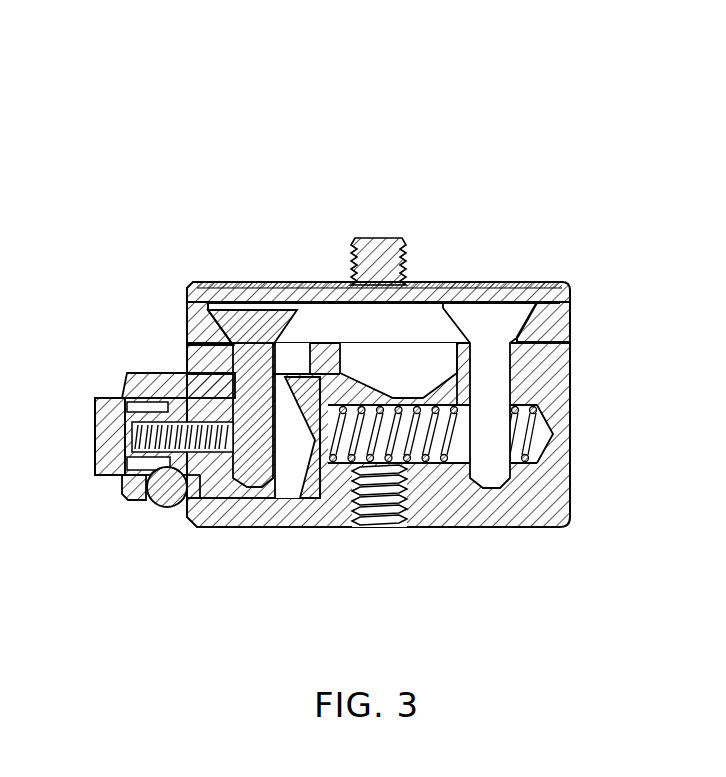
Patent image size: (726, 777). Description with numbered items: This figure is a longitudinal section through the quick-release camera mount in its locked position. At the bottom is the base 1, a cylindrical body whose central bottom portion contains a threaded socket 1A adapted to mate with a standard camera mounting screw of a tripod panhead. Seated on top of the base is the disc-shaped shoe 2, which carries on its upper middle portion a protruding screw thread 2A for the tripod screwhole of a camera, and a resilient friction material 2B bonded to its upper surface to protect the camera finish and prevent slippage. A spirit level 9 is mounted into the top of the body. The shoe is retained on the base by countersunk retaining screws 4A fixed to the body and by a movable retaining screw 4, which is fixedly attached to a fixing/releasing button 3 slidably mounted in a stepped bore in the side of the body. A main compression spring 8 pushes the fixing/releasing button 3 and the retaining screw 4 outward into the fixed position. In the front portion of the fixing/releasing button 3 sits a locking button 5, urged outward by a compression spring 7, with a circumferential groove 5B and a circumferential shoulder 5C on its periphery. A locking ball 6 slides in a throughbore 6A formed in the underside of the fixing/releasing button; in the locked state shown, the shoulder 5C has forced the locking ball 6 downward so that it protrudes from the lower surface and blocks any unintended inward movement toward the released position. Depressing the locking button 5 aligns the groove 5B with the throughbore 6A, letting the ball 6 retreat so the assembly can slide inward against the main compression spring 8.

The base 1 is at (585, 450).
The threaded socket 1A is at (375, 532).
The shoe 2 is at (428, 265).
The protruding screw thread 2A is at (394, 227).
The resilient friction material 2B is at (447, 280).
The fixing/releasing button 3 is at (173, 358).
The retaining screw 4 is at (260, 317).
The retaining screws 4A is at (510, 315).
The locking button 5 is at (95, 440).
The circumferential groove 5B is at (133, 355).
The circumferential shoulder 5C is at (147, 397).
The locking ball 6 is at (152, 507).
The throughbore 6A is at (120, 500).
The compression spring 7 is at (207, 500).
The main compression spring 8 is at (312, 430).
The spirit level 9 is at (368, 333).